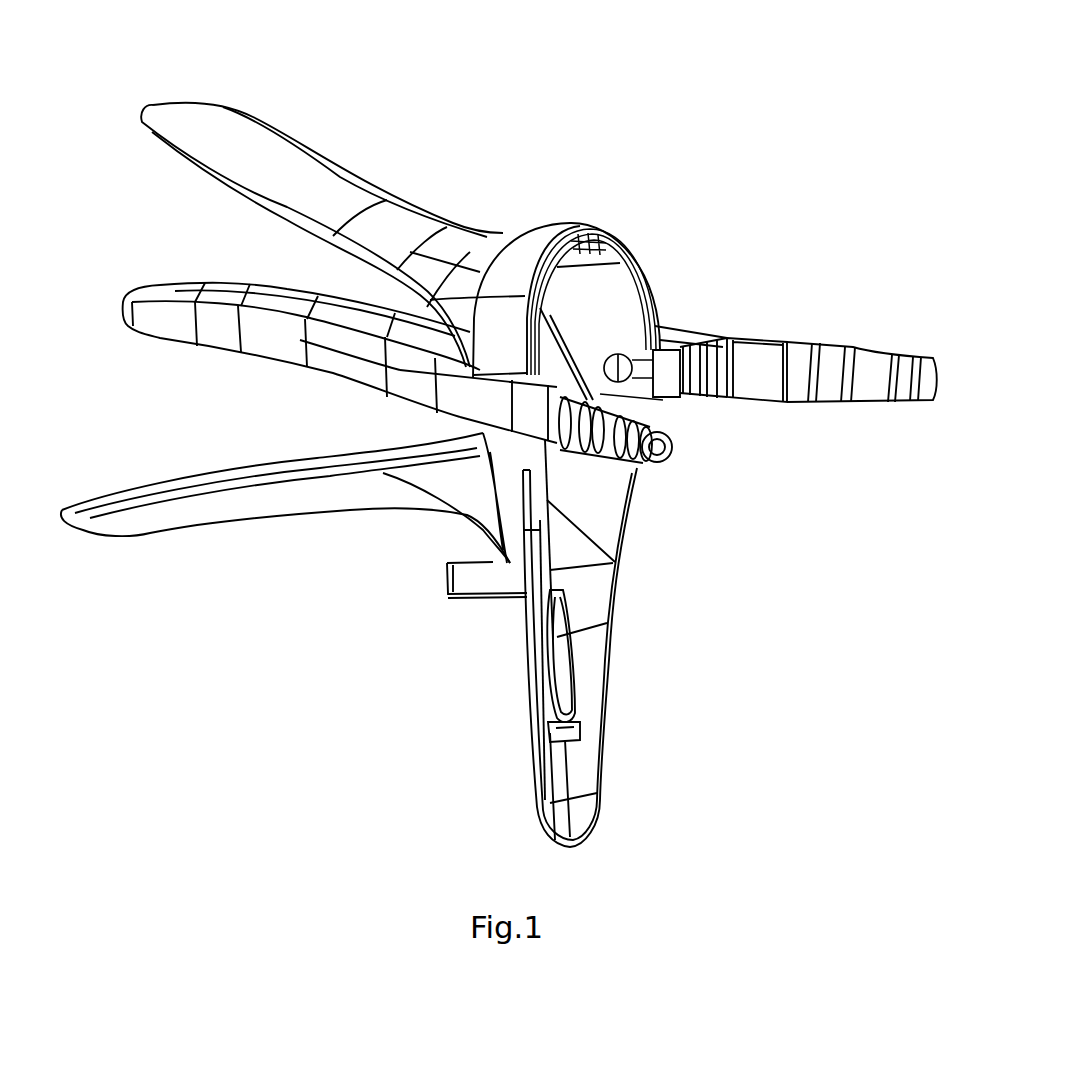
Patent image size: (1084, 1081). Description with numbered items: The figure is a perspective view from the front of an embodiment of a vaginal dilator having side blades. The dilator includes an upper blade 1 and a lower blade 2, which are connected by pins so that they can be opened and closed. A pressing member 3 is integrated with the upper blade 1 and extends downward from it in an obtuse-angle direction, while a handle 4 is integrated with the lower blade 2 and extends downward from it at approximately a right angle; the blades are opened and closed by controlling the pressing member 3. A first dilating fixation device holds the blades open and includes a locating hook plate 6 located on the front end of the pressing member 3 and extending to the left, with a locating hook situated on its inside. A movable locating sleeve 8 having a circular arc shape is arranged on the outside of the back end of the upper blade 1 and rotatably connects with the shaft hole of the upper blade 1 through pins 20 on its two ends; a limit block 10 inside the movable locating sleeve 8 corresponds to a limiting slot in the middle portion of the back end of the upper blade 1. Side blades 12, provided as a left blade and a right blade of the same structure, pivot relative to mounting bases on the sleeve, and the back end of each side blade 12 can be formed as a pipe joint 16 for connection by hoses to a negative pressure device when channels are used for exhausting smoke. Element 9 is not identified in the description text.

The upper blade 1 is at (340, 192).
The lower blade 2 is at (178, 515).
The pressing member 3 is at (555, 650).
The handle 4 is at (597, 765).
The locating hook plate 6 is at (493, 567).
The movable locating sleeve 8 is at (535, 242).
The sealing ring 9 is at (597, 225).
The limit block 10 is at (581, 240).
The side blade 12 is at (235, 282).
The pipe joint 16 is at (796, 360).
The pin 20 is at (668, 400).